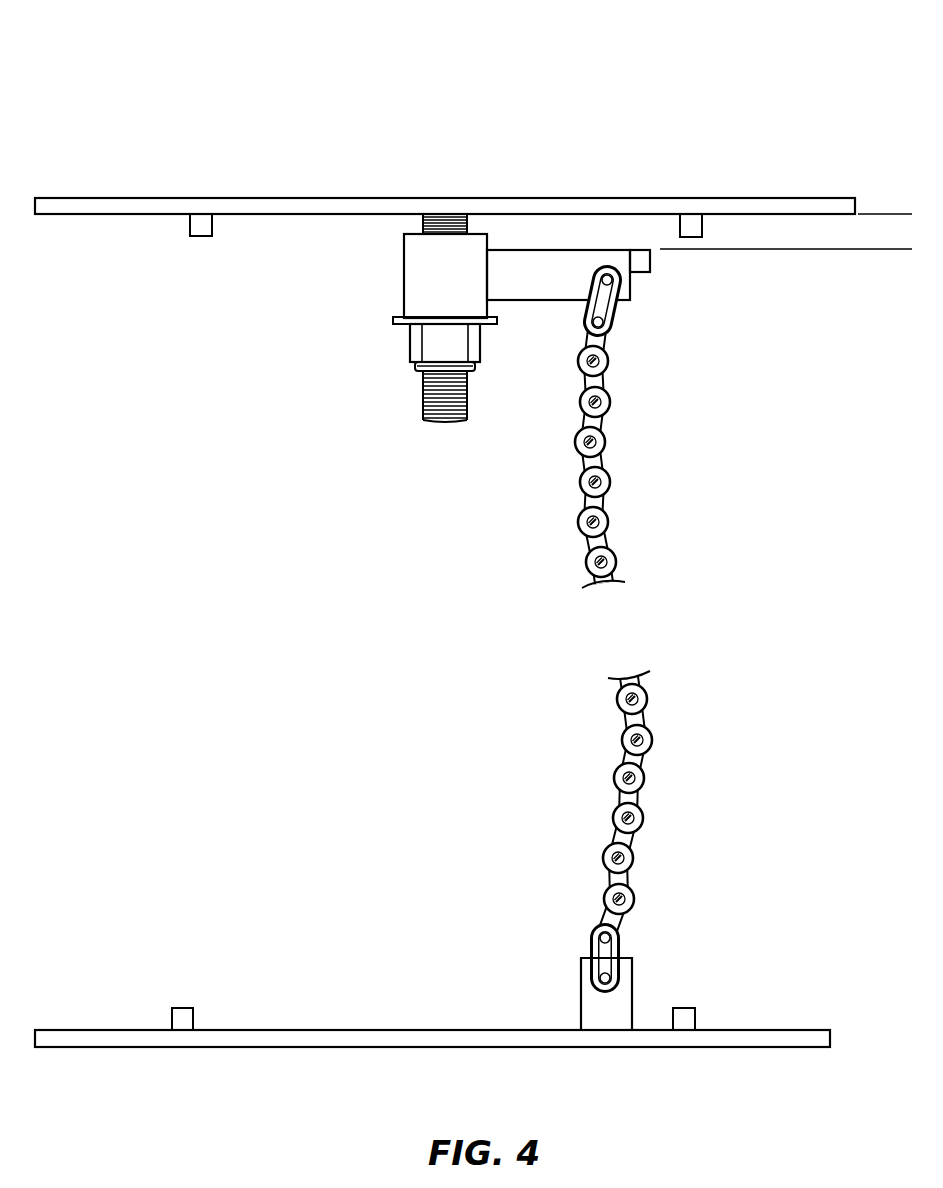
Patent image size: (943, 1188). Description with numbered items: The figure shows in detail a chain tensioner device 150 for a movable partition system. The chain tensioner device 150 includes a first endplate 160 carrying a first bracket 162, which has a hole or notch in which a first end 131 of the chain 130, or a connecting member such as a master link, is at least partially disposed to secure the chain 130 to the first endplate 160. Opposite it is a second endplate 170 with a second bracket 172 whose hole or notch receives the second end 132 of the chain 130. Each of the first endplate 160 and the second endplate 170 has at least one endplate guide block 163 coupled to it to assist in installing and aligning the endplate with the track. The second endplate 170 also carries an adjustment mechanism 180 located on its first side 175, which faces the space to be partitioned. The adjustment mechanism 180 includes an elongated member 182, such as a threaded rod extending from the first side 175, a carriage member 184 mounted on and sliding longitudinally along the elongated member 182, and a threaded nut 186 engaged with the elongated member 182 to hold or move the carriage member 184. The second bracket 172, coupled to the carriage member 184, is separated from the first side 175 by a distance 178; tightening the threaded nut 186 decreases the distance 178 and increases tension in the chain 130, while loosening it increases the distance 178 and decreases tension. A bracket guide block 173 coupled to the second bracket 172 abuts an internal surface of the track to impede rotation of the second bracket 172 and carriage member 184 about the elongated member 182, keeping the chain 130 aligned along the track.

The chain tensioner device 150 is at (445, 90).
The second endplate 170 is at (558, 198).
The first side 175 is at (296, 228).
The endplate guide block 163 is at (195, 227).
The carriage member 184 is at (428, 283).
The threaded nut 186 is at (433, 343).
The elongated member 182 is at (422, 392).
The adjustment mechanism 180 is at (393, 442).
The second bracket 172 is at (548, 290).
The bracket guide block 173 is at (650, 268).
The distance 178 is at (890, 177).
The chain 130 is at (610, 555).
The second end 132 is at (615, 325).
The first end 131 is at (592, 937).
The first bracket 162 is at (593, 1007).
The first endplate 160 is at (333, 1030).